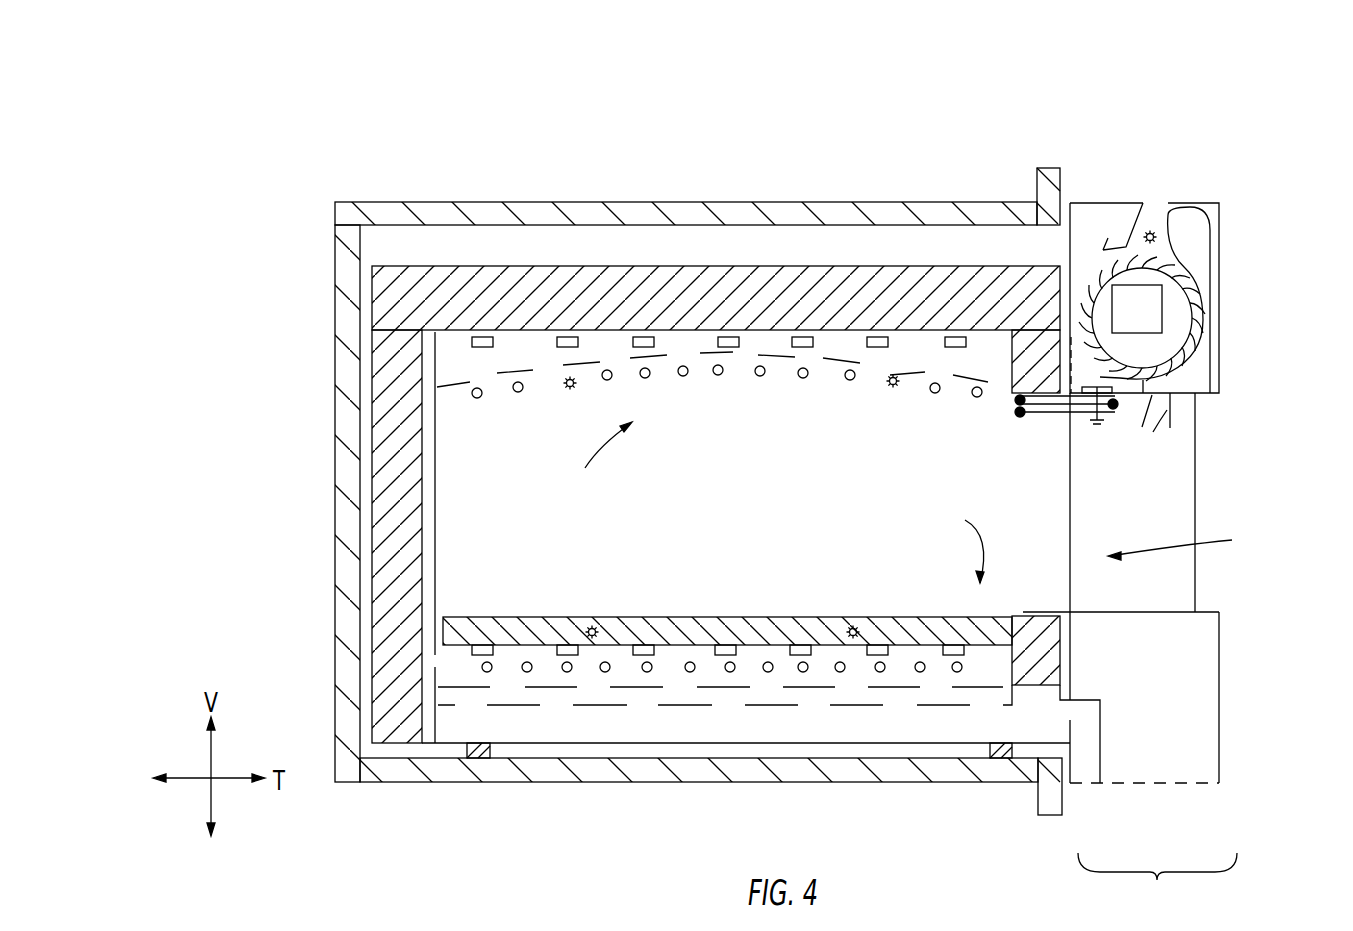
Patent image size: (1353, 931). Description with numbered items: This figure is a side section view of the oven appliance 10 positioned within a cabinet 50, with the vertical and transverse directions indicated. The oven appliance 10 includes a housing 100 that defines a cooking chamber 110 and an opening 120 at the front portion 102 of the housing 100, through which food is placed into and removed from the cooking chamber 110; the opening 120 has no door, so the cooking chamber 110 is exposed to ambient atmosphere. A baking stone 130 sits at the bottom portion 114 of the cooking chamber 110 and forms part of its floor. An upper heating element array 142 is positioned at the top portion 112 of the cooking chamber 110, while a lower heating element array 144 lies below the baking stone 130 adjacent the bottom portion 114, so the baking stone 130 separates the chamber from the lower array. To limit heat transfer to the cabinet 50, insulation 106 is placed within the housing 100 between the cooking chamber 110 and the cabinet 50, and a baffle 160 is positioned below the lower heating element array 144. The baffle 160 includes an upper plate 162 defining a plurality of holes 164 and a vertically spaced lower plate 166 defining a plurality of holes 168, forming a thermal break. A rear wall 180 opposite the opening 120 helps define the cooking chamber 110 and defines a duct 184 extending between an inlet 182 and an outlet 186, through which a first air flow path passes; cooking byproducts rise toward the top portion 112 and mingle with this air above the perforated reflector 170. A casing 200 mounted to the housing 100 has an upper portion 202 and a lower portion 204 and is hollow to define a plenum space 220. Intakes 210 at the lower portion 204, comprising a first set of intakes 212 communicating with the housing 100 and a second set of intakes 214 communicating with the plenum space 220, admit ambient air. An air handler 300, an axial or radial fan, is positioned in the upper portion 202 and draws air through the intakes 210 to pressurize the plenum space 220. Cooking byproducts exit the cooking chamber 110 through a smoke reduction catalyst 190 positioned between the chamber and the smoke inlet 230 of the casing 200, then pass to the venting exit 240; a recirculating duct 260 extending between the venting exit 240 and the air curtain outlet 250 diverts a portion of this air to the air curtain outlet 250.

The oven appliance 10 is at (440, 153).
The cabinet 50 is at (360, 202).
The housing 100 is at (369, 585).
The front portion 102 is at (1070, 512).
The insulation 106 is at (731, 285).
The cooking chamber 110 is at (737, 480).
The top portion 112 is at (588, 454).
The bottom portion 114 is at (952, 546).
The opening 120 is at (1191, 542).
The baking stone 130 is at (713, 620).
The upper heating element array 142 is at (850, 380).
The lower heating element array 144 is at (918, 655).
The baffle 160 is at (677, 697).
The upper plate 162 is at (745, 687).
The plurality of holes 164 is at (590, 687).
The lower plate 166 is at (855, 707).
The plurality of holes 168 is at (552, 710).
The perforated reflector 170 is at (697, 353).
The rear wall 180 is at (435, 524).
The inlet 182 is at (437, 654).
The duct 184 is at (425, 438).
The outlet 186 is at (437, 347).
The smoke reduction catalyst 190 is at (1012, 362).
The casing 200 is at (1197, 480).
The upper portion 202 is at (1112, 203).
The lower portion 204 is at (1220, 737).
The intakes 210 is at (1157, 885).
The first set of intakes 212 is at (1088, 783).
The second set of intakes 214 is at (1172, 783).
The plenum space 220 is at (1173, 665).
The smoke inlet 230 is at (1063, 353).
The venting exit 240 is at (1153, 213).
The air curtain outlet 250 is at (1140, 428).
The recirculating duct 260 is at (1212, 287).
The air handler 300 is at (1088, 280).